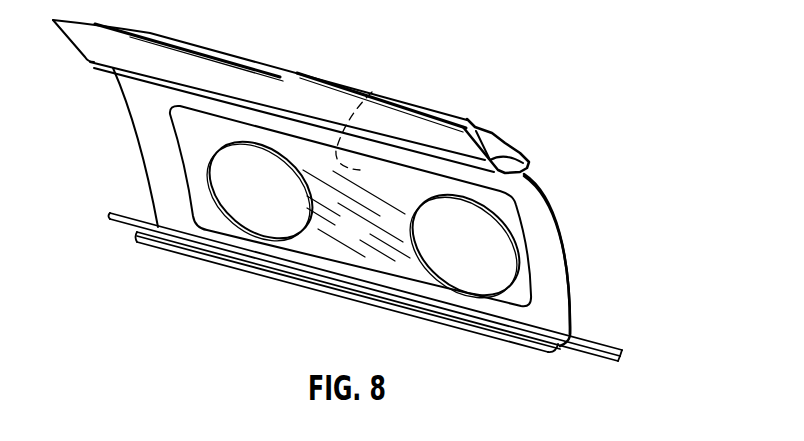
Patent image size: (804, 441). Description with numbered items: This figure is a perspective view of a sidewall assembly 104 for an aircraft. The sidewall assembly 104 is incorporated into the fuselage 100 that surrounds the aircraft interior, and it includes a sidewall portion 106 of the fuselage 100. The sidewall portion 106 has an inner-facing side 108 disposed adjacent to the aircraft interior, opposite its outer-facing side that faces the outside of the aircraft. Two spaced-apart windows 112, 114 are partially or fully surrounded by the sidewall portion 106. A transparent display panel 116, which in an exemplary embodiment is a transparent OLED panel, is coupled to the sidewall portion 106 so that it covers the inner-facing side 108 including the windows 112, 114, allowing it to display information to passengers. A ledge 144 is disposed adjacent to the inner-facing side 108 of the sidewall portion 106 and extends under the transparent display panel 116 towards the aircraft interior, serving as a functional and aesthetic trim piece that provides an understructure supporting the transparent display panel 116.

The fuselage 100 is at (203, 50).
The sidewall assembly 104 is at (588, 178).
The sidewall portion 106 is at (523, 197).
The inner-facing side 108 is at (372, 92).
The window 112 is at (250, 161).
The window 114 is at (480, 252).
The transparent display panel 116 is at (260, 213).
The ledge 144 is at (407, 313).